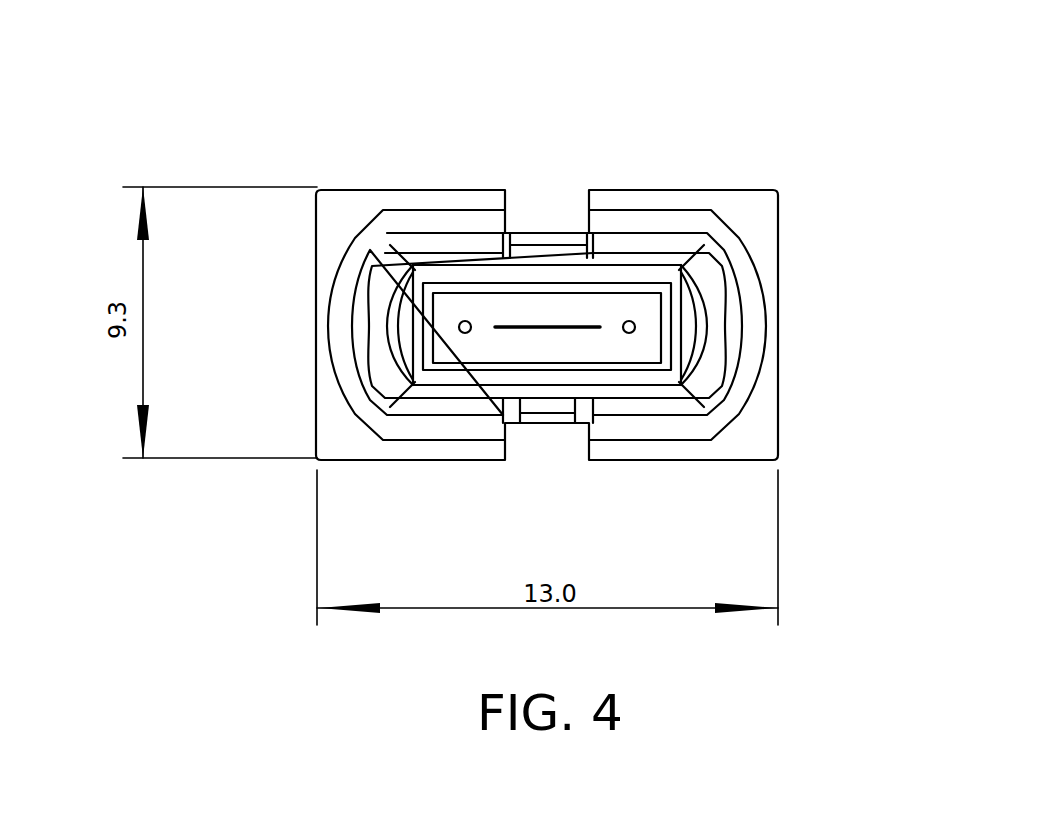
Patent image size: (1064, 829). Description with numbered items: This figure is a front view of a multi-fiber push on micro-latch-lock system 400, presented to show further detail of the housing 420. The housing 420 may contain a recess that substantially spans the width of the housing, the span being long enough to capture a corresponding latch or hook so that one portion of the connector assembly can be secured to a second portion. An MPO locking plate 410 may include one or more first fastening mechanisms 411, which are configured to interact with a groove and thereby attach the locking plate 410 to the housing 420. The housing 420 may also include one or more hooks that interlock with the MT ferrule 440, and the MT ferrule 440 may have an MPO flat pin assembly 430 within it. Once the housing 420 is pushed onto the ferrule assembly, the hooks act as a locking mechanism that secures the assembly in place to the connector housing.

The micro-latch-lock system 400 is at (569, 343).
The MPO locking plate 410 is at (790, 337).
The first fastening mechanism 411 is at (551, 209).
The housing 420 is at (368, 409).
The MPO flat pin assembly 430 is at (404, 287).
The MT ferrule 440 is at (504, 277).